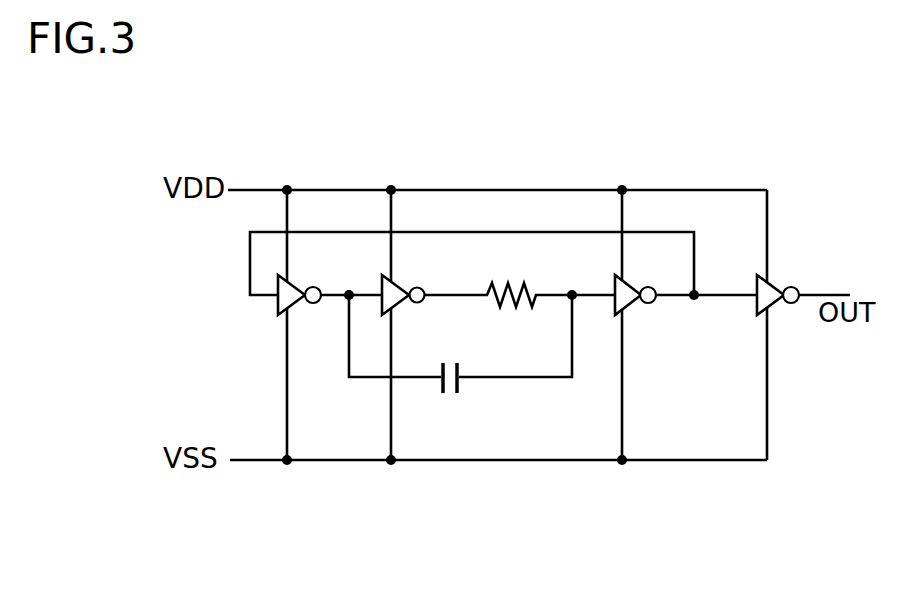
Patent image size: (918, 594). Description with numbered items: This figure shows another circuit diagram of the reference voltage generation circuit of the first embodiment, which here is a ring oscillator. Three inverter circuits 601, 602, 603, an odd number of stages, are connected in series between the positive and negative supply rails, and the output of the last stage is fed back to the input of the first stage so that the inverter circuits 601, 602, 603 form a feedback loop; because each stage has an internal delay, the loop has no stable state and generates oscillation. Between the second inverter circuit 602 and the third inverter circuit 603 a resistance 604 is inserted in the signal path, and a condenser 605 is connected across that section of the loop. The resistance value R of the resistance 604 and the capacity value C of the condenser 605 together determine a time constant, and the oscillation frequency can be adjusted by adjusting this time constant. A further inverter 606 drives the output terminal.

The inverter circuit 601 is at (295, 283).
The inverter circuit 602 is at (402, 281).
The inverter circuit 603 is at (632, 285).
The resistance 604 is at (508, 281).
The condenser 605 is at (462, 390).
The output inverter 606 is at (775, 280).